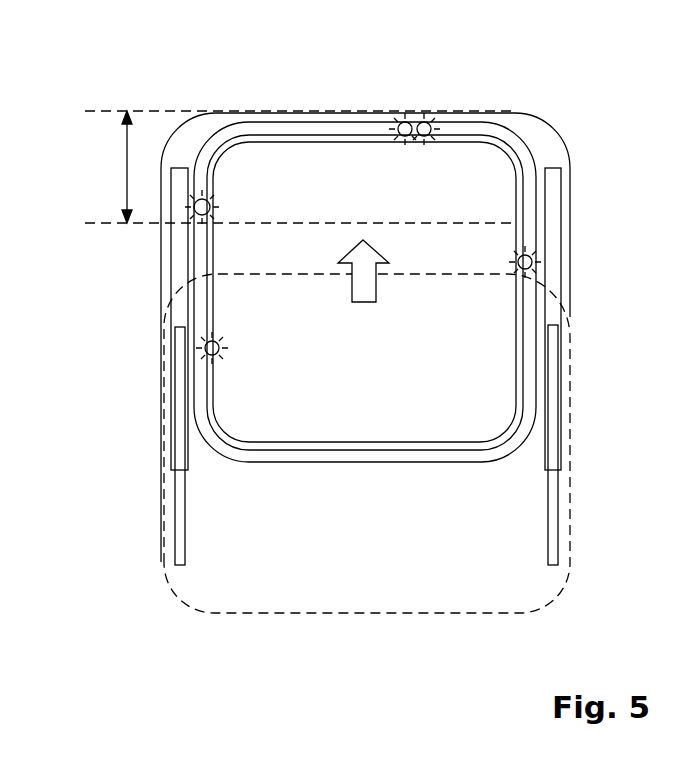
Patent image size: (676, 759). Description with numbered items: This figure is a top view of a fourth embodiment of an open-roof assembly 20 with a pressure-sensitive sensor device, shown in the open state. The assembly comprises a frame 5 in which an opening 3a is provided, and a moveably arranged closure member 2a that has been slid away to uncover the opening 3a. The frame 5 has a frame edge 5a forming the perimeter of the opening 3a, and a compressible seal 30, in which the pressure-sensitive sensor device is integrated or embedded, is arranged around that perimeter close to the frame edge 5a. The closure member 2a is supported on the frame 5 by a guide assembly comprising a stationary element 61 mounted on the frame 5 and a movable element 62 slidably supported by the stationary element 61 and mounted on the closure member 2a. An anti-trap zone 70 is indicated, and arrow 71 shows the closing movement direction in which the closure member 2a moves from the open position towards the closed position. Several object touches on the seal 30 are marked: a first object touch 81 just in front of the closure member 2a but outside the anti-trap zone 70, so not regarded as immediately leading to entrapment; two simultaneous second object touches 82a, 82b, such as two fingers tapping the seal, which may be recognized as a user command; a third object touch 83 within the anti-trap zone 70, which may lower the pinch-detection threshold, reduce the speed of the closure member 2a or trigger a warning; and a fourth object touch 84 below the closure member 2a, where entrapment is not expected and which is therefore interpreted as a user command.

The open-roof assembly 20 is at (585, 143).
The frame 5 is at (187, 130).
The compressible seal 30 is at (340, 130).
The frame edge 5a is at (258, 141).
The stationary element 61 is at (180, 272).
The movable element 62 is at (178, 511).
The anti-trap zone 70 is at (125, 153).
The arrow indicating closing movement direction 71 is at (365, 287).
The first object touch 81 is at (532, 258).
The second object touch 82a is at (400, 122).
The second object touch 82b is at (430, 122).
The third object touch 83 is at (197, 212).
The fourth object touch 84 is at (206, 351).
The opening 3a is at (452, 248).
The closure member 2a is at (362, 542).